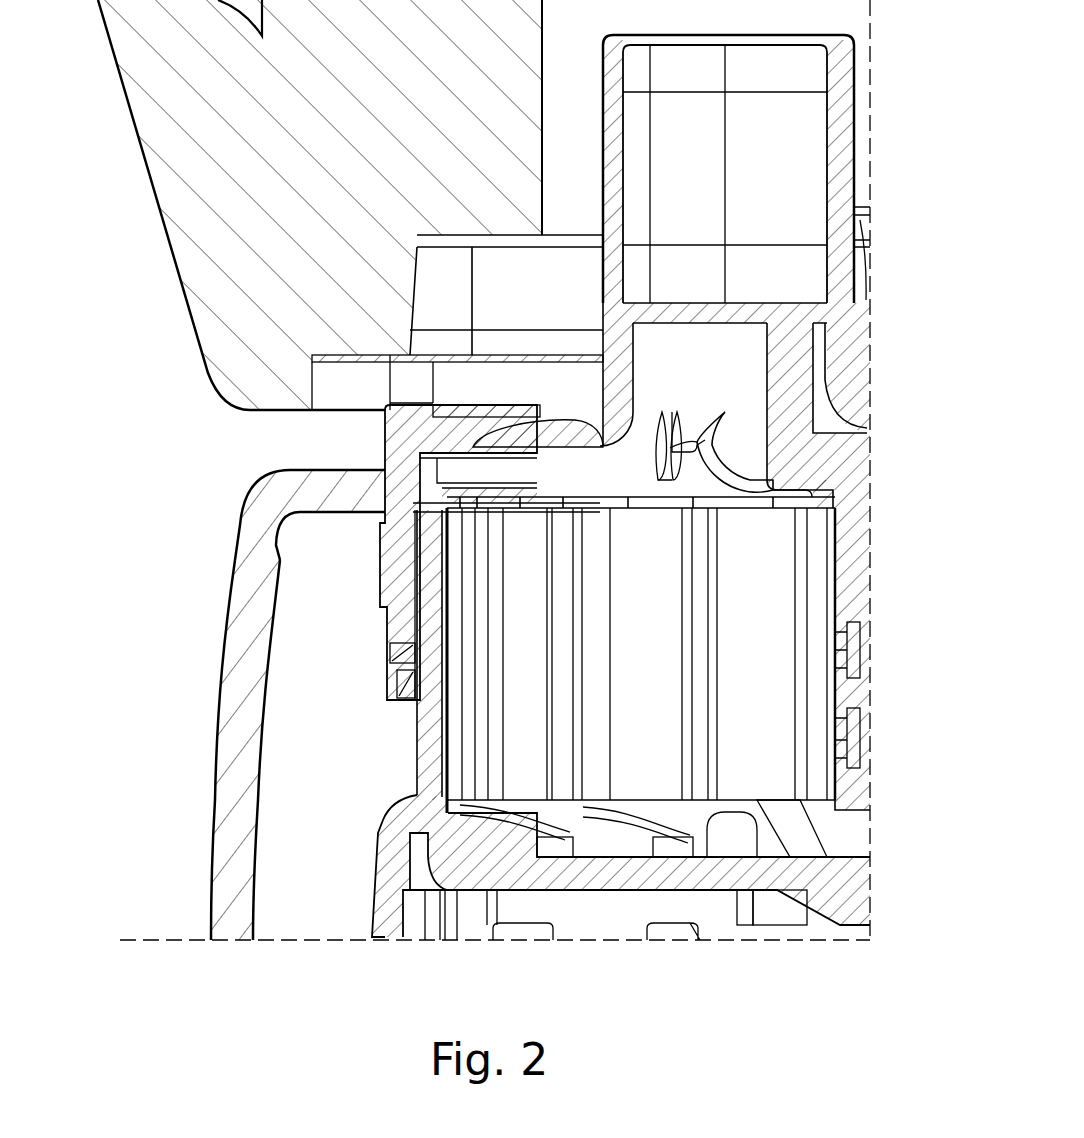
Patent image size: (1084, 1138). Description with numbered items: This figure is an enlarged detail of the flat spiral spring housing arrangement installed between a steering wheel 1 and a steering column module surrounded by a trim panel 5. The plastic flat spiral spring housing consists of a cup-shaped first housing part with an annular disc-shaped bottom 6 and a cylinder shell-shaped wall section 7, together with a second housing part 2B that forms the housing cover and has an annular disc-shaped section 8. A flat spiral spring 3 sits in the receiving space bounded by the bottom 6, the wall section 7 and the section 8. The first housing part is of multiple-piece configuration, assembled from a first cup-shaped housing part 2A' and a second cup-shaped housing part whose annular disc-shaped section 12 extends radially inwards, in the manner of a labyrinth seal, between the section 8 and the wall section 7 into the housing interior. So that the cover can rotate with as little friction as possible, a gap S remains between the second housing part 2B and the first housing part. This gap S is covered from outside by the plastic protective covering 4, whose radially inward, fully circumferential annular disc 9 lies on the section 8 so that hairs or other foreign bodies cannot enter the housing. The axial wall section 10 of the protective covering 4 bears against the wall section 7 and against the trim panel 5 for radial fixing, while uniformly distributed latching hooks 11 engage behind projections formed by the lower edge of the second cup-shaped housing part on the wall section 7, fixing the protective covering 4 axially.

The steering wheel 1 is at (322, 70).
The second housing part 2B is at (614, 182).
The annular disc-shaped section 8 is at (462, 398).
The annular disc 9 is at (553, 420).
The protective covering 4 is at (400, 445).
The axial wall section 10 is at (385, 497).
The latching hooks 11 is at (380, 677).
The first cup-shaped housing part 2A' is at (279, 689).
The trim panel 5 is at (232, 903).
The cylinder shell-shaped wall section 7 is at (410, 550).
The bottom 6 is at (605, 873).
The flat spiral spring 3 is at (767, 685).
The annular disc-shaped section 12 is at (517, 523).
The gap S is at (522, 463).